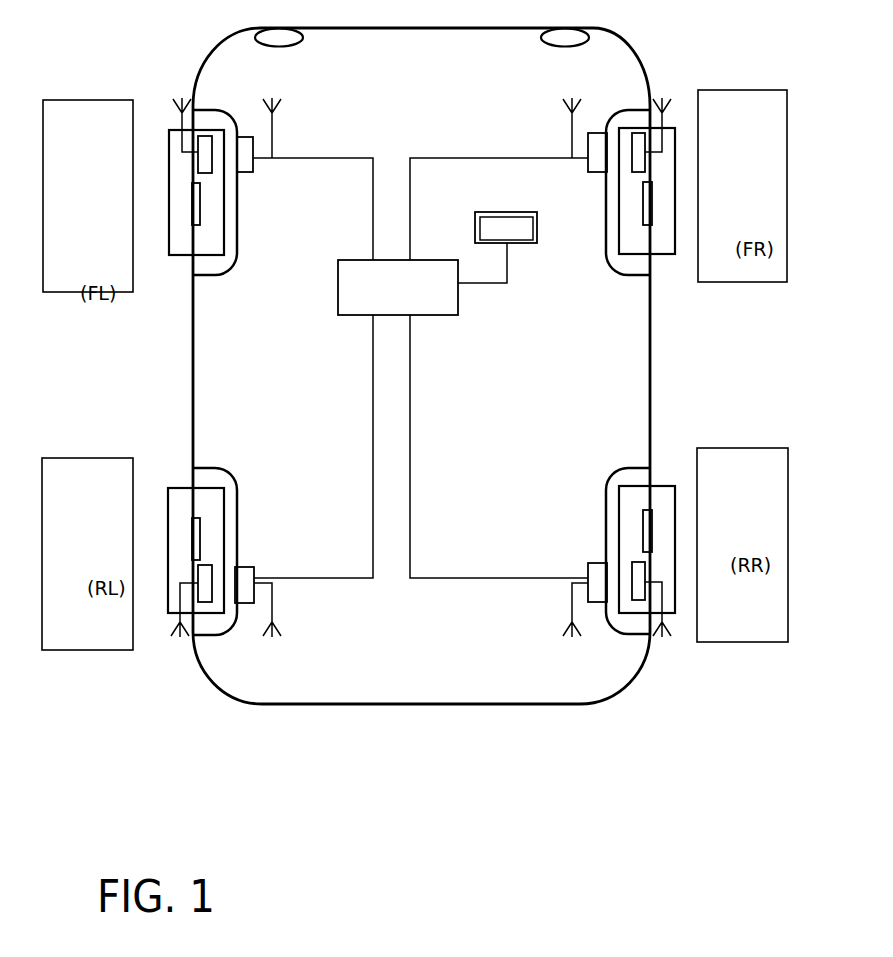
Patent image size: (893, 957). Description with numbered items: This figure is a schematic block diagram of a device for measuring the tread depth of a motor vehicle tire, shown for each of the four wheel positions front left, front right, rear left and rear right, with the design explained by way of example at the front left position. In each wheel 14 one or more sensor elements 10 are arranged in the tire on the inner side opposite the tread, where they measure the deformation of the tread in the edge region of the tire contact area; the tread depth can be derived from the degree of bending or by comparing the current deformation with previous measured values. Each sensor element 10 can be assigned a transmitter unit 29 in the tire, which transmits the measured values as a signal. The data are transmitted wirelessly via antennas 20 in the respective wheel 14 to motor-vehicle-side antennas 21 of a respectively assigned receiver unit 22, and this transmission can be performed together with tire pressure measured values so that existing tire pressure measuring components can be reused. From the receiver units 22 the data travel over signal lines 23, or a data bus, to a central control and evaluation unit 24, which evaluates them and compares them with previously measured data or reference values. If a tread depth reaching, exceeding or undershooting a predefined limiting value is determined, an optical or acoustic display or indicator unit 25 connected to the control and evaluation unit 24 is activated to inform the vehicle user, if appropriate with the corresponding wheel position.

The sensor element 10 is at (192, 197).
The wheel 14 is at (152, 223).
The antenna 20 is at (181, 127).
The motor-vehicle-side antenna 21 is at (276, 136).
The receiver unit 22 is at (240, 173).
The signal line 23 is at (410, 427).
The central control and evaluation unit 24 is at (338, 273).
The display or indicator unit 25 is at (514, 247).
The transmitter unit 29 is at (198, 163).